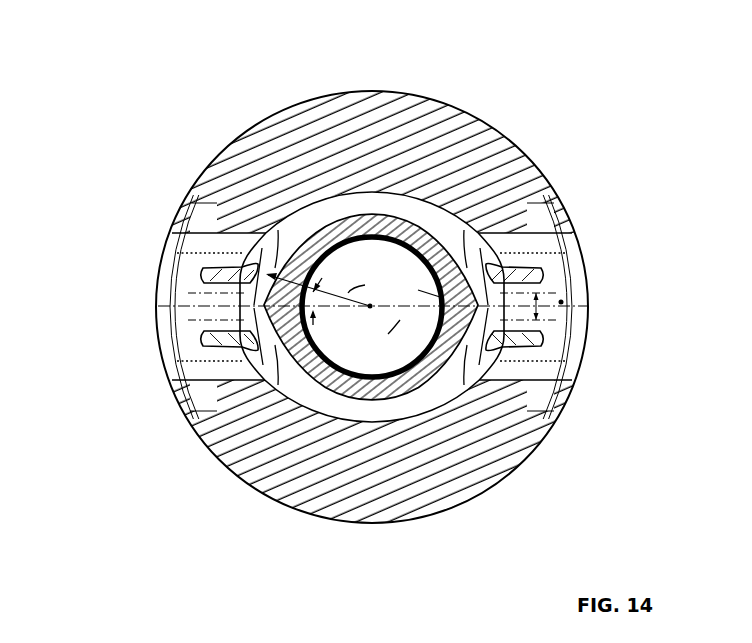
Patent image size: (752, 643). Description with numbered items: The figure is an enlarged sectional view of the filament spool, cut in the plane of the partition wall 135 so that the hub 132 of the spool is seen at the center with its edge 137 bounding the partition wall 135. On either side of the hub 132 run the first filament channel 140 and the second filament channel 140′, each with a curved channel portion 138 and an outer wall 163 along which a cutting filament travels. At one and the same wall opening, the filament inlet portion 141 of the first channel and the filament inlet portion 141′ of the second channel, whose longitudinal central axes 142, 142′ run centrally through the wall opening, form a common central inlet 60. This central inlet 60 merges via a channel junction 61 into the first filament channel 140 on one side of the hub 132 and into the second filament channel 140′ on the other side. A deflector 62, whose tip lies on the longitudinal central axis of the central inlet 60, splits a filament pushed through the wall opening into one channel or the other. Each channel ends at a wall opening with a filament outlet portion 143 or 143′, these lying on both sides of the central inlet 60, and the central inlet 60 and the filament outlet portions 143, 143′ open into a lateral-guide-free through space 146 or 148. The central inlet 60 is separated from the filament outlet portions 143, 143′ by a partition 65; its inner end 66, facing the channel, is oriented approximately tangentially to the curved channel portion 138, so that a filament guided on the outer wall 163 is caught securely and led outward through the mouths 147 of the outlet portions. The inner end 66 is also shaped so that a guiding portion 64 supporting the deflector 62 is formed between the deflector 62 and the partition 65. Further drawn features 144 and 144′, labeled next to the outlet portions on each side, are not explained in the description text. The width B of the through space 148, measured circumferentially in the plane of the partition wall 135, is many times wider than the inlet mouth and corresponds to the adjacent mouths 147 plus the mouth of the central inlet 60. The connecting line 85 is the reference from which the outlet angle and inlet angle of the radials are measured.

The central inlet 60 is at (173, 303).
The channel junction 61 is at (255, 400).
The deflector 62 is at (440, 375).
The guiding portion 64 is at (270, 227).
The partition 65 is at (178, 248).
The inner end of the partition 66 is at (247, 233).
The connecting line 85 is at (343, 312).
The hub 132 is at (292, 158).
The partition wall 135 is at (337, 212).
The edge of the partition wall 137 is at (452, 96).
The curved channel portion 138 is at (368, 196).
The first filament channel 140 is at (426, 182).
The second filament channel 140′ is at (357, 434).
The filament inlet portion 141 is at (180, 317).
The filament inlet portion 141′ is at (192, 292).
The longitudinal central axis 142 is at (183, 337).
The longitudinal central axis 142′ is at (184, 284).
The filament outlet portion 143 is at (190, 252).
The filament outlet portion 143′ is at (214, 368).
The lug 144 is at (203, 243).
The lug 144′ is at (198, 378).
The lateral-guide-free through space 146 is at (561, 302).
The mouths of the filament outlet portions 147 is at (203, 272).
The guide-free through space 148 is at (173, 368).
The outer wall of the filament channel 163 is at (388, 194).
The width of the guide-free through space B is at (180, 360).